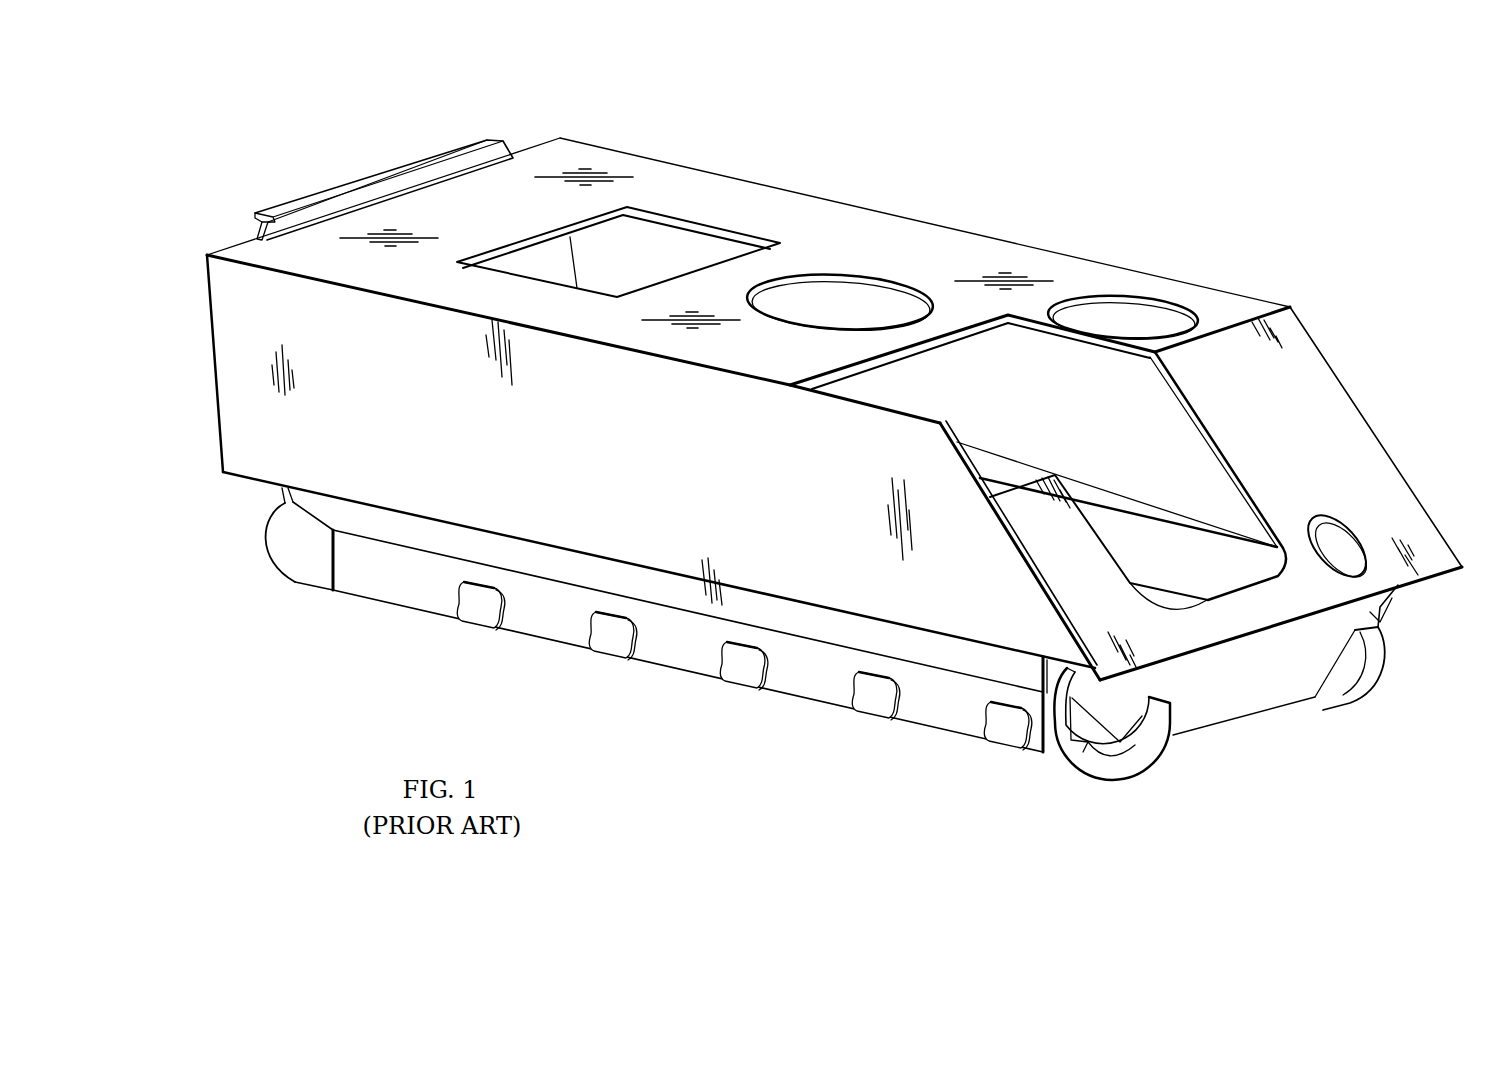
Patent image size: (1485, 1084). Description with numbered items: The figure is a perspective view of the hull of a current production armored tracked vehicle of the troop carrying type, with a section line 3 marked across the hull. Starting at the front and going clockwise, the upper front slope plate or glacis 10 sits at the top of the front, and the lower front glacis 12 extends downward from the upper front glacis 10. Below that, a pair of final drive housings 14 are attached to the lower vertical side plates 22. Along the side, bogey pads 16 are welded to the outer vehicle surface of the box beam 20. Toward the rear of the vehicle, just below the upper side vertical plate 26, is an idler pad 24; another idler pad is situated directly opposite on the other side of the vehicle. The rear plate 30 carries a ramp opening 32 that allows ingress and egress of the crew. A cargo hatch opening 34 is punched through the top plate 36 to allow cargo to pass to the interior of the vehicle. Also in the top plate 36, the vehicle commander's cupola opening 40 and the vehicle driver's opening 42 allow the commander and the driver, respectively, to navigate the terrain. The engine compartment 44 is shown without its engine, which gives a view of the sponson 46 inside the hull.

The section line 3- 3 is at (798, 192).
The upper front glacis 10 is at (1399, 457).
The lower front glacis 12 is at (1381, 608).
The final drive housings 14 is at (1148, 760).
The bogey pads 16 is at (607, 652).
The box beam 20 is at (670, 653).
The lower vertical side plates 22 is at (418, 540).
The idler pad 24 is at (289, 552).
The upper side vertical plate 26 is at (232, 390).
The rear plate 30 is at (231, 246).
The ramp opening 32 is at (373, 177).
The cargo hatch opening 34 is at (641, 232).
The top plate 36 is at (1003, 252).
The vehicle commander's cupola opening 40 is at (851, 298).
The vehicle driver's opening 42 is at (1133, 311).
The engine compartment 44 is at (1163, 414).
The sponson 46 is at (1213, 513).